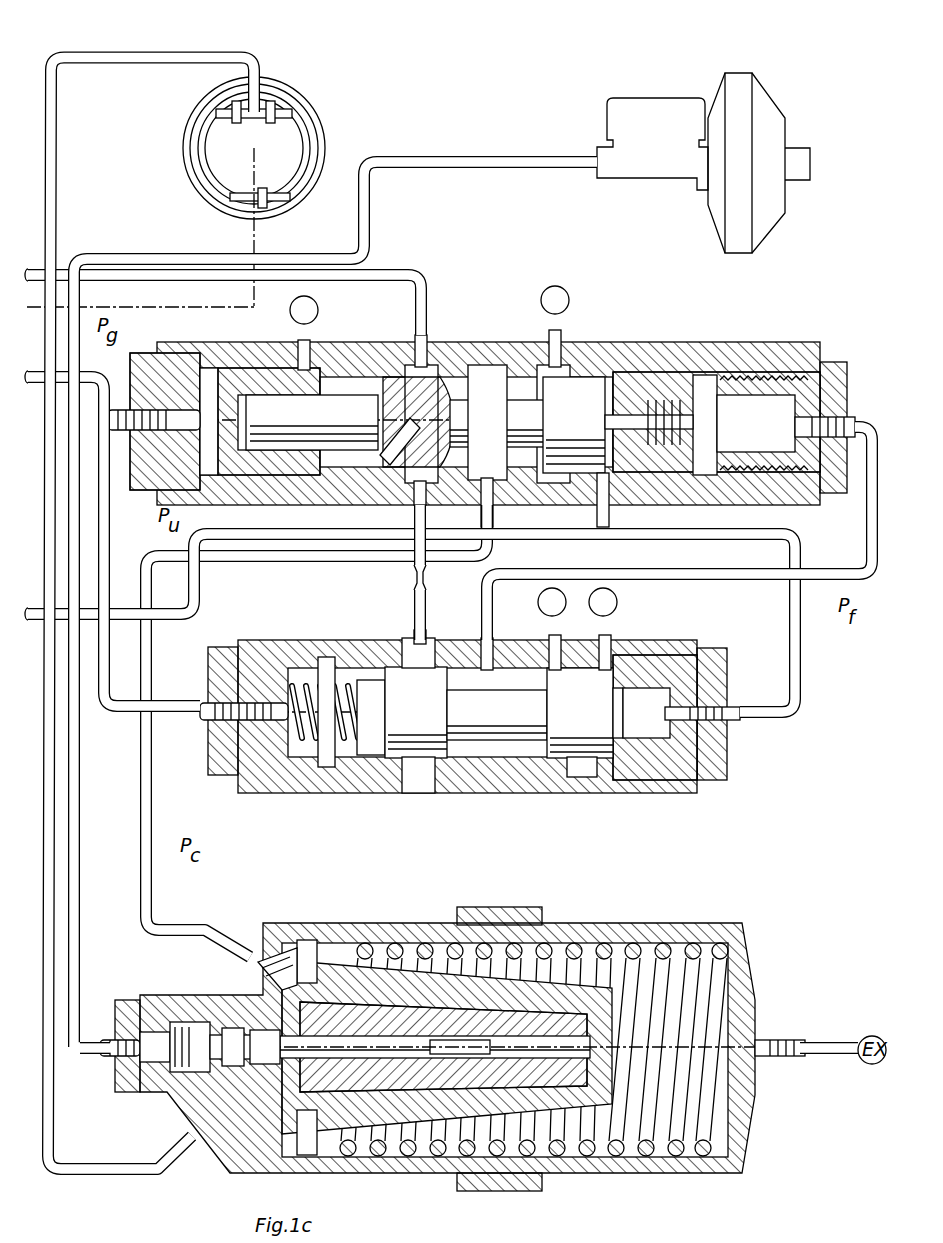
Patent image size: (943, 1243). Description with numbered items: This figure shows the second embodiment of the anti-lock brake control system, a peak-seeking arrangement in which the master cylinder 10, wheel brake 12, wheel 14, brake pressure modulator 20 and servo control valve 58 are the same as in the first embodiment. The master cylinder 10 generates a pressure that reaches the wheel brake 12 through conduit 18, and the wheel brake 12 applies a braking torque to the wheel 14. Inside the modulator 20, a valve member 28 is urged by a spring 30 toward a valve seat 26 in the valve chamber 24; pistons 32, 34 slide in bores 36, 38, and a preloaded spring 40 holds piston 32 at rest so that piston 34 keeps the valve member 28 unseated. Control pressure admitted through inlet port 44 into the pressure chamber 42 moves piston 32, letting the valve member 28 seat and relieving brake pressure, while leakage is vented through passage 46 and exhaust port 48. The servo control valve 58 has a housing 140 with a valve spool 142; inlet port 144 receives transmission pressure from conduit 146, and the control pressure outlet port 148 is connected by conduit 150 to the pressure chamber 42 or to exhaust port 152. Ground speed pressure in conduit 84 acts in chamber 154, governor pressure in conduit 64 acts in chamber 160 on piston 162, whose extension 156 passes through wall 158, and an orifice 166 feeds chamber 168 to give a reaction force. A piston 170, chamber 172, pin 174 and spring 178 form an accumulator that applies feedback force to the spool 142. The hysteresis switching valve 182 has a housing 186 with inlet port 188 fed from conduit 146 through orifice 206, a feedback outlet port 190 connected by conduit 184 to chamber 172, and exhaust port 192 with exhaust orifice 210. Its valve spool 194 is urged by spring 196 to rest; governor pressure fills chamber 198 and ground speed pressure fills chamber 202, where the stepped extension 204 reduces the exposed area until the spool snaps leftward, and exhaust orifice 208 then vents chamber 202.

The master cylinder 10 is at (640, 97).
The wheel brake 12 is at (268, 92).
The wheel 14 is at (280, 146).
The conduit 18 is at (55, 170).
The brake pressure modulator 20 is at (473, 1057).
The valve chamber 24 is at (198, 1034).
The valve seat 26 is at (232, 1028).
The valve member 28 is at (188, 1022).
The spring 30 is at (160, 1030).
The piston 32 is at (350, 960).
The piston 34 is at (340, 1055).
The bore 36 is at (615, 945).
The bore 38 is at (398, 1056).
The spring 40 is at (690, 950).
The pressure chamber 42 is at (308, 940).
The inlet port 44 is at (262, 962).
The passage 46 is at (262, 1000).
The exhaust port 48 is at (803, 1045).
The servo control valve 58 is at (486, 400).
The conduit 64 is at (105, 560).
The conduit 84 is at (200, 590).
The housing 140 is at (484, 364).
The valve spool 142 is at (568, 378).
The inlet port 144 is at (424, 350).
The conduit 146 is at (426, 278).
The control pressure outlet port 148 is at (490, 490).
The conduit 150 is at (152, 800).
The exhaust port 152 is at (551, 350).
The chamber 154 is at (606, 488).
The extension 156 is at (272, 392).
The wall 158 is at (330, 392).
The chamber 160 is at (208, 366).
The piston 162 is at (265, 480).
The orifice 166 is at (398, 480).
The chamber 168 is at (362, 480).
The piston 170 is at (755, 393).
The chamber 172 is at (818, 368).
The pin 174 is at (655, 433).
The spring 178 is at (695, 400).
The hysteresis switching valve 182 is at (490, 711).
The conduit 184 is at (722, 582).
The housing 186 is at (435, 790).
The inlet port 188 is at (414, 665).
The feedback pressure outlet port 190 is at (487, 660).
The exhaust port 192 is at (555, 666).
The valve spool 194 is at (590, 765).
The spring 196 is at (332, 680).
The chamber 198 is at (306, 680).
The chamber 202 is at (680, 700).
The extension 204 is at (619, 686).
The orifice 206 is at (426, 580).
The exhaust orifice 208 is at (612, 628).
The exhaust orifice 210 is at (549, 628).